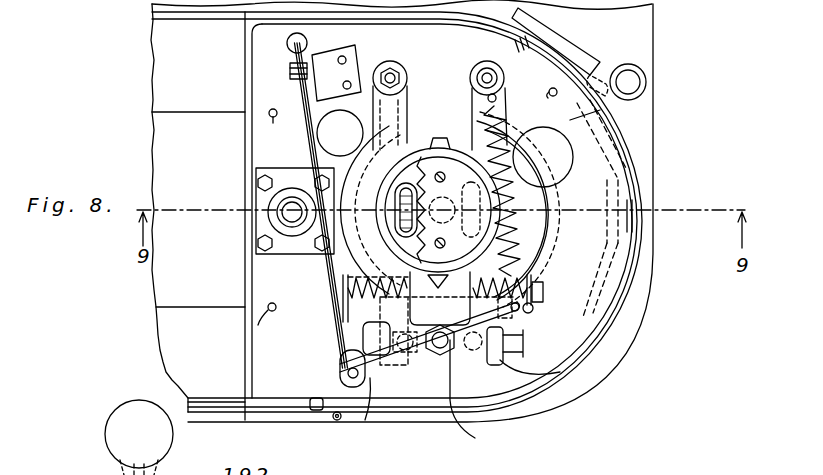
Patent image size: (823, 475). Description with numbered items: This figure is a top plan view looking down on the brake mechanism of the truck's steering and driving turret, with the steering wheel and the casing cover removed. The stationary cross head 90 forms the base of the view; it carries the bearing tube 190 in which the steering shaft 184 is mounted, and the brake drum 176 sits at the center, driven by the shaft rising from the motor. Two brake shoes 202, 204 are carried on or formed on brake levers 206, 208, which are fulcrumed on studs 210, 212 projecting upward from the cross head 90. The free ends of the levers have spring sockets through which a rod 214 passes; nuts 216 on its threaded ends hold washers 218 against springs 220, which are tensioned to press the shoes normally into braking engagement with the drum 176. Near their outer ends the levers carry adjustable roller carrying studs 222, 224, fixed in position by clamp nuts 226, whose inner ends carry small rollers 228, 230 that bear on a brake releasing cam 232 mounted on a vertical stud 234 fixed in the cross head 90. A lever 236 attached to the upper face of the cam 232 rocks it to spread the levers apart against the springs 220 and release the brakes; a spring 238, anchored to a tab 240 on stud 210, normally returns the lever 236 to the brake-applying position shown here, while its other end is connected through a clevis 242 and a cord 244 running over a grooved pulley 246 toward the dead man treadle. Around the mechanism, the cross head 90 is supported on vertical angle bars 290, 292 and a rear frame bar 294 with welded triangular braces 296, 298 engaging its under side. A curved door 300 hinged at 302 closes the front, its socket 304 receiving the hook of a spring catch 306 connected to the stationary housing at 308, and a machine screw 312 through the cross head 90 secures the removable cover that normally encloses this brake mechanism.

The cross head 90 is at (570, 120).
The brake drum 176 is at (438, 148).
The steering shaft 184 is at (283, 212).
The bearing tube 190 is at (265, 255).
The brake shoe 202 is at (520, 217).
The brake shoe 204 is at (377, 180).
The brake lever 206 is at (537, 223).
The brake lever 208 is at (345, 283).
The stud 210 is at (492, 78).
The stud 212 is at (379, 66).
The rod 214 is at (442, 280).
The nut 216 is at (537, 280).
The washer 218 is at (343, 317).
The spring 220 is at (360, 335).
The roller carrying stud 222 is at (523, 340).
The roller carrying stud 224 is at (370, 345).
The clamp nut 226 is at (368, 378).
The roller 228 is at (510, 310).
The roller 230 is at (405, 325).
The brake releasing cam 232 is at (443, 358).
The vertical stud 234 is at (488, 395).
The lever 236 is at (365, 420).
The spring 238 is at (500, 173).
The tab 240 is at (500, 101).
The clevis 242 is at (341, 360).
The cord 244 is at (253, 163).
The grooved pulley 246 is at (290, 72).
The vertical angle bar 290 is at (250, 24).
The vertical angle bar 292 is at (258, 402).
The rear frame bar 294 is at (647, 220).
The triangular brace 296 is at (613, 285).
The triangular brace 298 is at (607, 153).
The door 300 is at (637, 260).
The hinge 302 is at (334, 419).
The socket 304 is at (590, 56).
The spring catch 306 is at (570, 37).
The housing connection point 308 is at (503, 28).
The machine screw 312 is at (412, 208).